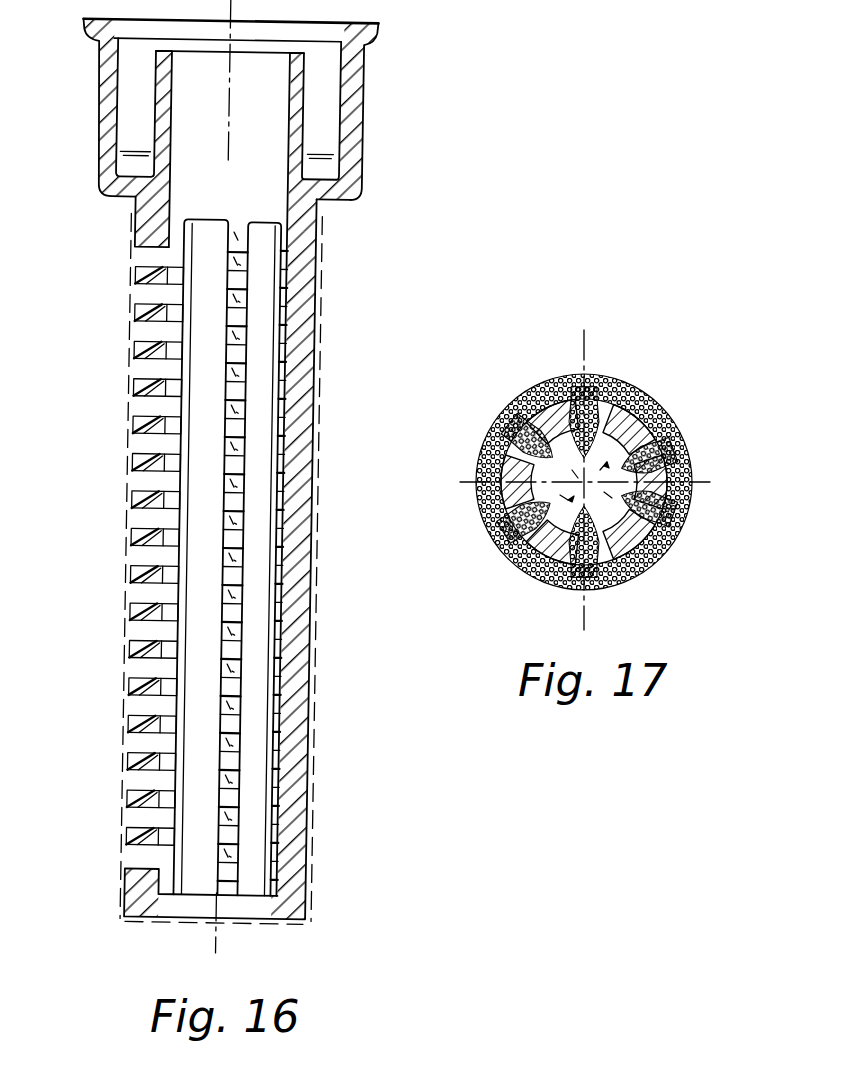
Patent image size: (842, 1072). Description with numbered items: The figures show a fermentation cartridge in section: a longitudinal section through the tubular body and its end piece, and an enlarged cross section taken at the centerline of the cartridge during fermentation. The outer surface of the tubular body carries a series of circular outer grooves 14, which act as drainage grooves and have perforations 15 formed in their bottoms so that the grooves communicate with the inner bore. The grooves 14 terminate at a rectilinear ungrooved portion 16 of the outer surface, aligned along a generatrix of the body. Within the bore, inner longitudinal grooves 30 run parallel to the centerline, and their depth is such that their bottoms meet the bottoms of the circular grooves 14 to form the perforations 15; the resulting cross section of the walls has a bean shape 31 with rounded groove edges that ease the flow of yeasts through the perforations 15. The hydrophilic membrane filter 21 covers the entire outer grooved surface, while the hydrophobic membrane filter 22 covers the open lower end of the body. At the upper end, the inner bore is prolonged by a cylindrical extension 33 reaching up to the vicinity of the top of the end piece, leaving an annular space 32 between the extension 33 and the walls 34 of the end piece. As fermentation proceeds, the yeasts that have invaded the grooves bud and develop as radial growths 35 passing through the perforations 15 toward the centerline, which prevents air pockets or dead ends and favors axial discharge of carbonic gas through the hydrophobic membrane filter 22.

In FIG. 16, the outer grooves 14 is at (143, 669).
In FIG. 16, the perforations 15 is at (228, 373).
In FIG. 16, the rectilinear ungrooved portion 16 is at (308, 371).
In FIG. 17, the rectilinear ungrooved portion 16 is at (691, 474).
In FIG. 16, the hydrophilic membrane filter 21 is at (130, 814).
In FIG. 16, the hydrophobic membrane filter 22 is at (313, 922).
In FIG. 16, the inner longitudinal grooves 30 is at (230, 607).
In FIG. 17, the bean shape 31 is at (560, 587).
In FIG. 16, the annular space 32 is at (130, 126).
In FIG. 16, the cylindrical extension 33 is at (164, 141).
In FIG. 16, the walls of the end piece 34 is at (341, 176).
In FIG. 17, the radial growths 35 is at (592, 485).